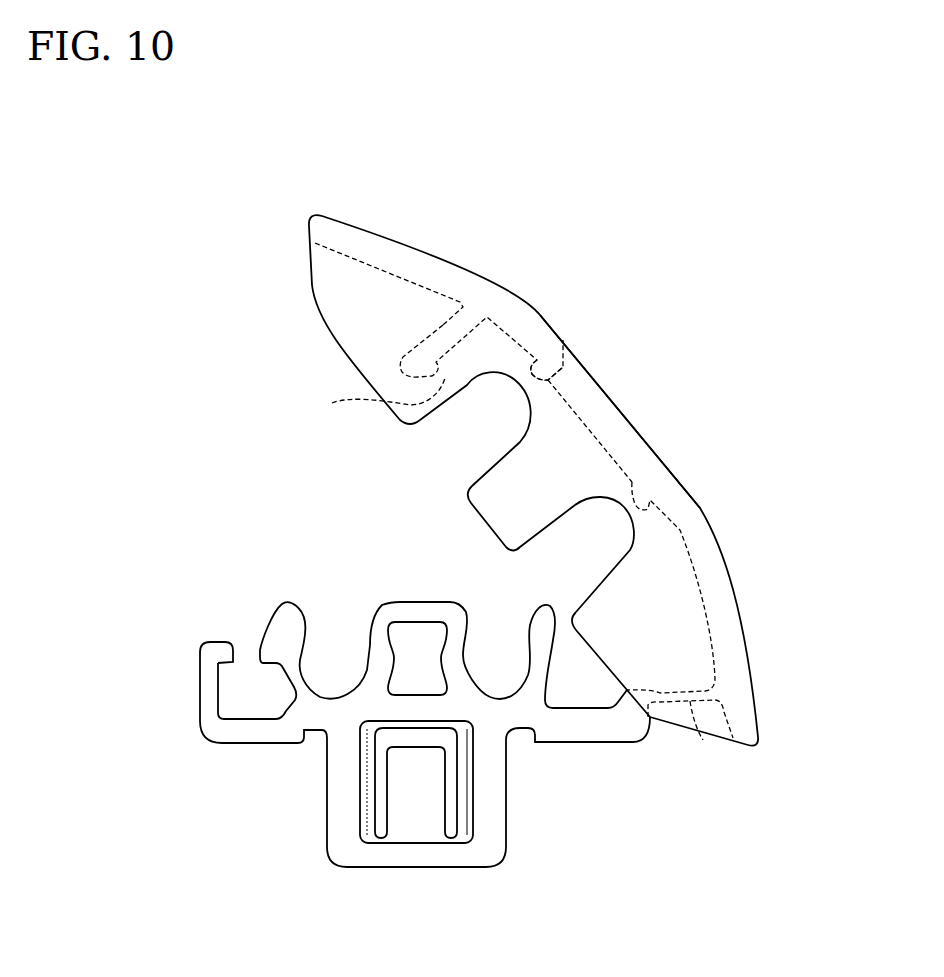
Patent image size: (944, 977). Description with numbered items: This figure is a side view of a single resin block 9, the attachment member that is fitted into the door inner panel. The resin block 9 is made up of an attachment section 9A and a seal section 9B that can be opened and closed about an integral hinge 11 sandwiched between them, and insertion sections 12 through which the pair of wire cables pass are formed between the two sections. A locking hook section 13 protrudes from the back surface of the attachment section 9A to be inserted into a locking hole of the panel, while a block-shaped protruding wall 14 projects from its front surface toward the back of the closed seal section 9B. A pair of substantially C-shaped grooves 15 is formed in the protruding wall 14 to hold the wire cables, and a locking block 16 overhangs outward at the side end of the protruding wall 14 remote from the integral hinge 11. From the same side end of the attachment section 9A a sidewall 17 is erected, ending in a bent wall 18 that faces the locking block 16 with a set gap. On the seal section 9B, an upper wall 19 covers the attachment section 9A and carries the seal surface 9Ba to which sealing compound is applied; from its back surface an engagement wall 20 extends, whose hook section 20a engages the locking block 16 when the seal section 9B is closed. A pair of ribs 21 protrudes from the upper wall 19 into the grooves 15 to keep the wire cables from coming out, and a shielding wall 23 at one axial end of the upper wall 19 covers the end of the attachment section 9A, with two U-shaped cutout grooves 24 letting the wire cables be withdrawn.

The resin block 9 is at (640, 362).
The attachment section 9A is at (557, 733).
The seal section 9B is at (710, 540).
The seal surface 9Ba is at (640, 430).
The integral hinge 11 is at (703, 740).
The insertion sections 12 is at (460, 615).
The locking hook section 13 is at (413, 802).
The protruding wall 14 is at (402, 600).
The C-shaped grooves 15 is at (305, 657).
The locking block 16 is at (267, 645).
The sidewall 17 is at (200, 690).
The bent wall 18 is at (225, 655).
The upper wall 19 is at (622, 411).
The engagement wall 20 is at (443, 322).
The hook section 20a is at (366, 400).
The ribs 21 is at (562, 340).
The shielding wall 23 is at (380, 312).
The U-shaped cutout grooves 24 is at (468, 385).